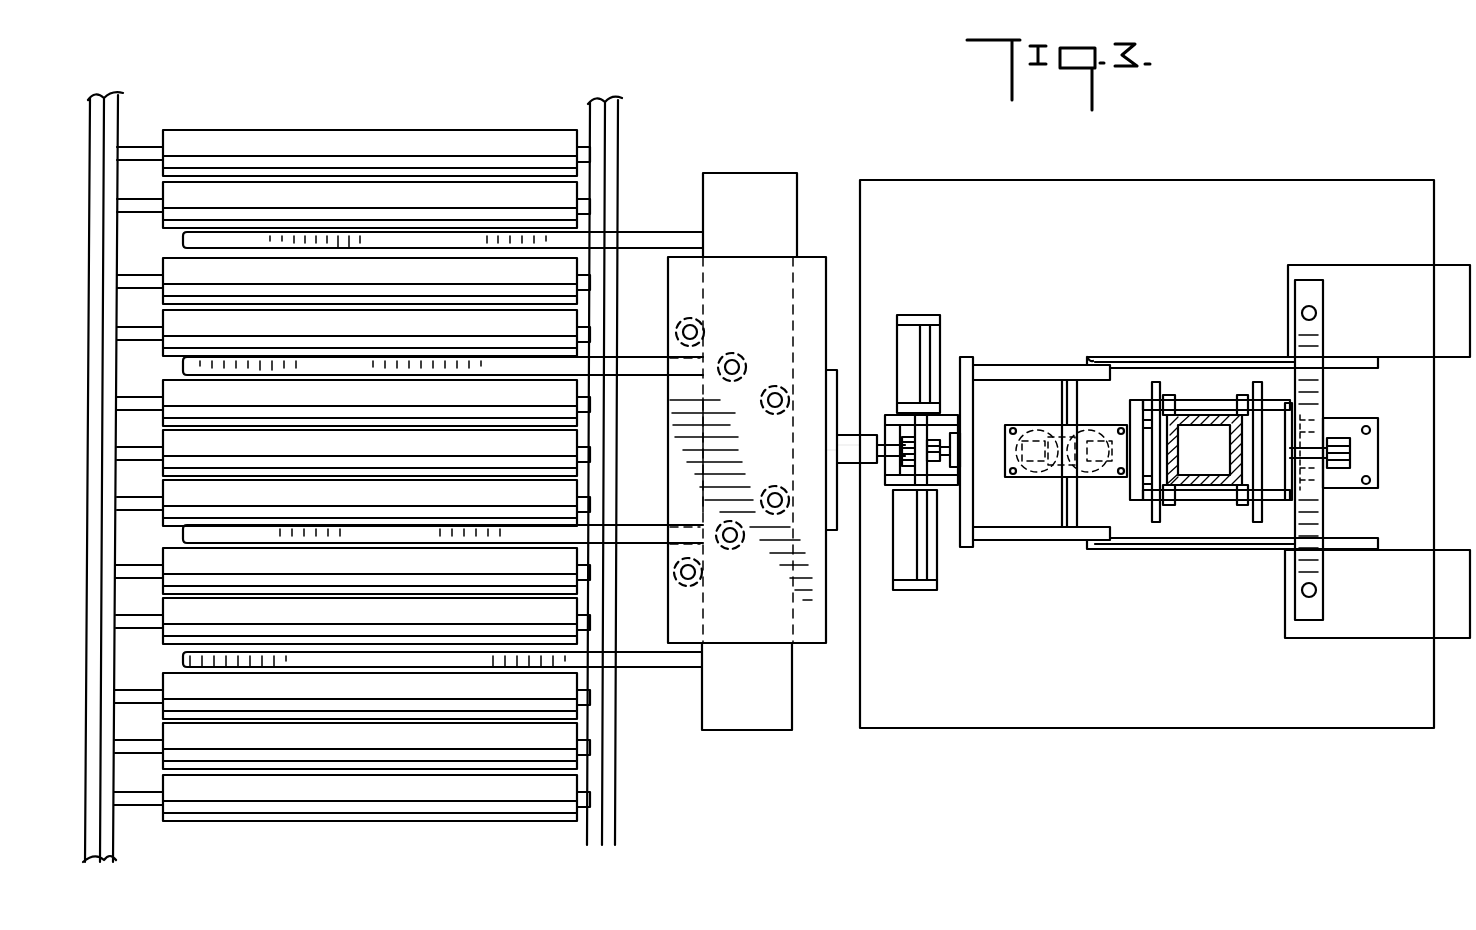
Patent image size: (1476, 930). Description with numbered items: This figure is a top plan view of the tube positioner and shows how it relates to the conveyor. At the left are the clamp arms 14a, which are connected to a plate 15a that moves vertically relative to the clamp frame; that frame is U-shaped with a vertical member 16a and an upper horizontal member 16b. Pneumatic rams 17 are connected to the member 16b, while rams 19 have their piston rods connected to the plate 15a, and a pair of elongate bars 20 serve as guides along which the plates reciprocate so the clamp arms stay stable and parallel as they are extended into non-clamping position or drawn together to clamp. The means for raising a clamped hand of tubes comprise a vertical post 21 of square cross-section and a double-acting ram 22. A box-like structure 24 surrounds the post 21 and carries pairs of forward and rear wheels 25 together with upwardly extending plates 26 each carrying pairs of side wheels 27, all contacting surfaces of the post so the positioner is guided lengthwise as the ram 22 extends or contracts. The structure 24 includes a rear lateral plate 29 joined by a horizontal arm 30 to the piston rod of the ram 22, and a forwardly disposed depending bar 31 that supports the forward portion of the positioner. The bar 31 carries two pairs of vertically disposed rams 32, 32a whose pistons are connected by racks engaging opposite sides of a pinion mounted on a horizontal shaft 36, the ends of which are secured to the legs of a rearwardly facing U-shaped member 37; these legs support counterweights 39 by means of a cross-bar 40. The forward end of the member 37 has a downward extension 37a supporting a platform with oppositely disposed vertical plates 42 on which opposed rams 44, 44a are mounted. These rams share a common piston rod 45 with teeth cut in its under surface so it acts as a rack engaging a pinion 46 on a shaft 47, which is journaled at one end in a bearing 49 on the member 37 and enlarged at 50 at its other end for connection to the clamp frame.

The clamp arm 14a is at (398, 233).
The plate 15a is at (745, 732).
The vertical member 16a is at (830, 433).
The upper horizontal member 16b is at (811, 643).
The pneumatic rams 17 is at (769, 413).
The rams 19 is at (678, 326).
The elongate bars 20 is at (742, 358).
The vertical post 21 is at (1202, 490).
The double-acting ram 22 is at (1360, 488).
The box-like structure 24 is at (1210, 382).
The forward and rear wheels 25 is at (1150, 498).
The upwardly extending plates 26 is at (1262, 385).
The side wheels 27 is at (1240, 505).
The rear lateral plate 29 is at (1290, 500).
The horizontal arm 30 is at (1320, 450).
The depending bar 31 is at (1130, 490).
The vertically disposed rams 32 is at (1100, 425).
The vertically disposed rams 32a is at (1037, 426).
The horizontal shaft 36 is at (1065, 510).
The U-shaped member 37 is at (1016, 365).
The downward extension 37a is at (968, 508).
The counterweights 39 is at (1438, 317).
The cross-bar 40 is at (1315, 330).
The vertical plates 42 is at (882, 488).
The ram 44 is at (940, 316).
The ram 44a is at (910, 590).
The common piston rod 45 is at (920, 432).
The pinion 46 is at (905, 470).
The shaft 47 is at (945, 445).
The bearing 49 is at (958, 470).
The enlarged end 50 is at (836, 454).